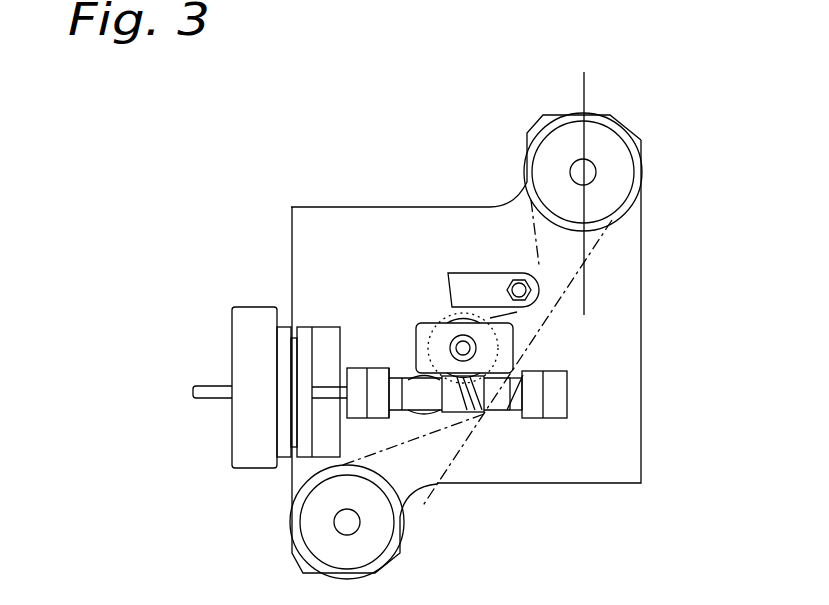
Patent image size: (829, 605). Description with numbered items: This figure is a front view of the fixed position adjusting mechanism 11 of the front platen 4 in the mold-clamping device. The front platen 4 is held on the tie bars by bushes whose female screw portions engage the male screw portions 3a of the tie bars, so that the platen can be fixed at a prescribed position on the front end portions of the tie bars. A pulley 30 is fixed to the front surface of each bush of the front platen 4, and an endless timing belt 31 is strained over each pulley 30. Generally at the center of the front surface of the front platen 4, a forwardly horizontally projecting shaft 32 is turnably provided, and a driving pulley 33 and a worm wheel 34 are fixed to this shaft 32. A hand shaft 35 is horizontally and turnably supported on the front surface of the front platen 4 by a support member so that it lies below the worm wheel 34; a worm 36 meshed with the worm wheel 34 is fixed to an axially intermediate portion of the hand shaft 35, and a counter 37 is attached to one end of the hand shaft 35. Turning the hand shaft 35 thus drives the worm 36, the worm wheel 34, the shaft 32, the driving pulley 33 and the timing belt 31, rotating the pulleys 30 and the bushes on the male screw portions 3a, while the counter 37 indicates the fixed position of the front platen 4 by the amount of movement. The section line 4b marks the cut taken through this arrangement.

The male screw portion 3a is at (597, 177).
The front platen 4 is at (330, 217).
The section line 4b- 4b is at (583, 72).
The fixed position adjusting mechanism 11 is at (595, 348).
The pulley 30 is at (642, 160).
The timing belt 31 is at (421, 513).
The shaft 32 is at (451, 273).
The driving pulley 33 is at (437, 322).
The worm wheel 34 is at (522, 415).
The hand shaft 35 is at (203, 382).
The worm 36 is at (463, 412).
The counter 37 is at (250, 305).